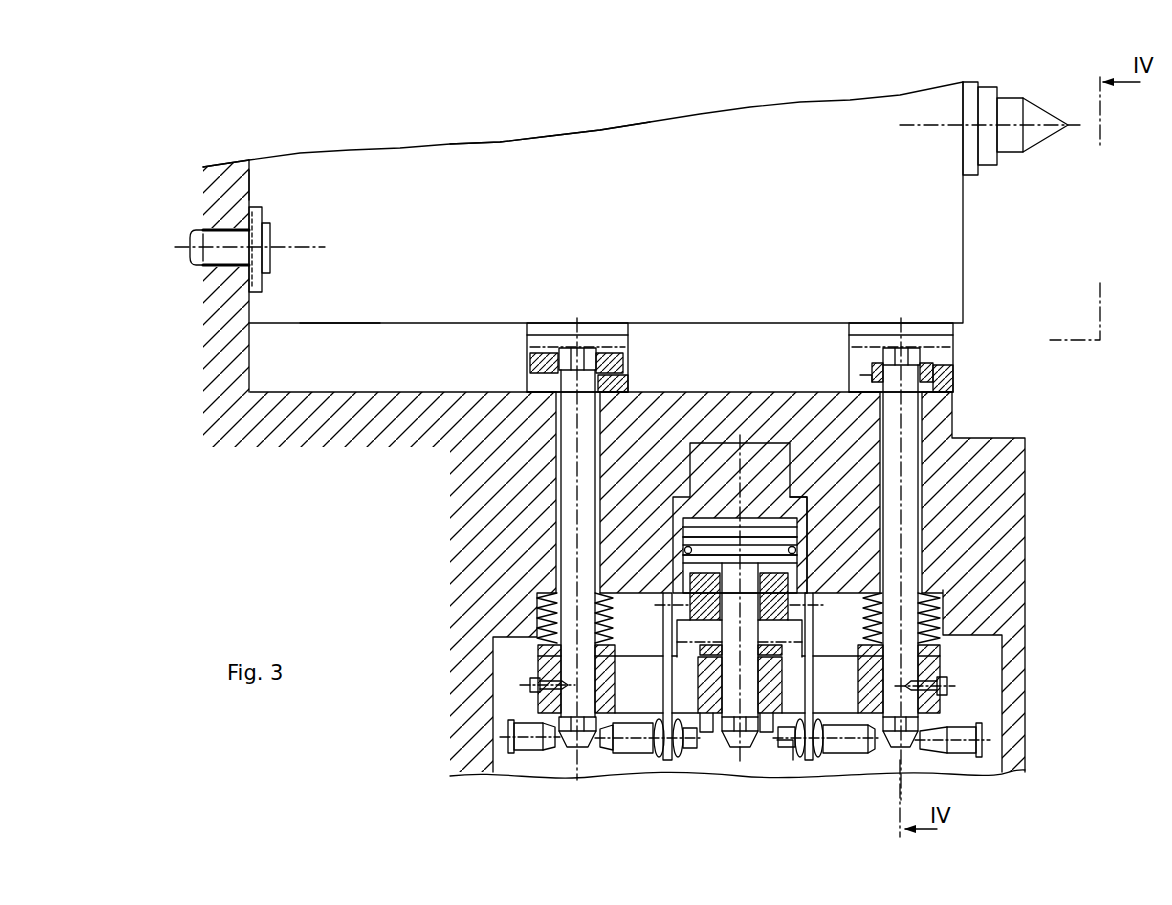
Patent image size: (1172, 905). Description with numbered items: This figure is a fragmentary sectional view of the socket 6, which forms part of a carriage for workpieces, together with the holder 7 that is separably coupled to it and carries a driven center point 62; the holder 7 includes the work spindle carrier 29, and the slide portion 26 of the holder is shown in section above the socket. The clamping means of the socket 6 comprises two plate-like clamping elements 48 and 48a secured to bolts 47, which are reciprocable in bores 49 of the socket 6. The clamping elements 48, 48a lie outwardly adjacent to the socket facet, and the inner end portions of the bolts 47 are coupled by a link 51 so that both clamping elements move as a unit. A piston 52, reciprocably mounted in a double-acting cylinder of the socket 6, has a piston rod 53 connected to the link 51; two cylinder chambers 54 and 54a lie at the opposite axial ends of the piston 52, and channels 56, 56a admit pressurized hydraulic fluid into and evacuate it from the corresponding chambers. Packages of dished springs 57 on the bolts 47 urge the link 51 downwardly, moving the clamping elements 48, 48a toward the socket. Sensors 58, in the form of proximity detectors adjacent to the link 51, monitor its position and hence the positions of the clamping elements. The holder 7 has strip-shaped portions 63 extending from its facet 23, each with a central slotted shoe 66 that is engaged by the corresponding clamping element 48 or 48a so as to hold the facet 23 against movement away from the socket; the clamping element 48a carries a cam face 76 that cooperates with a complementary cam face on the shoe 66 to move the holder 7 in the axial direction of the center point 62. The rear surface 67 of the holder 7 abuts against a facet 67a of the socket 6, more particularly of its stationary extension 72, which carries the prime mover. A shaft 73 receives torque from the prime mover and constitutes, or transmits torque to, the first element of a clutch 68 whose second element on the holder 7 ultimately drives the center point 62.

The socket 6 is at (1020, 513).
The holder 7 is at (497, 132).
The facet 23 is at (337, 330).
The tailstock slide 26 is at (905, 217).
The carrier 29 is at (597, 137).
The bolts 47 is at (570, 487).
The clamping element 48 is at (522, 353).
The clamping element 48a is at (866, 352).
The bores 49 is at (555, 468).
The link 51 is at (833, 697).
The piston 52 is at (720, 540).
The piston rod 53 is at (700, 558).
The cylinder chamber 54 is at (708, 522).
The cylinder chamber 54a is at (790, 550).
The channel 56 is at (690, 550).
The channel 56a is at (770, 568).
The dished springs 57 is at (545, 610).
The sensors 58 is at (830, 760).
The center point 62 is at (1040, 130).
The strip-shaped portions 63 is at (843, 347).
The shoe 66 is at (628, 382).
The rear surface 67 is at (248, 303).
The facet 67a is at (252, 183).
The clutch 68 is at (258, 213).
The extension 72 is at (218, 164).
The shaft 73 is at (198, 260).
The cam face 76 is at (863, 382).